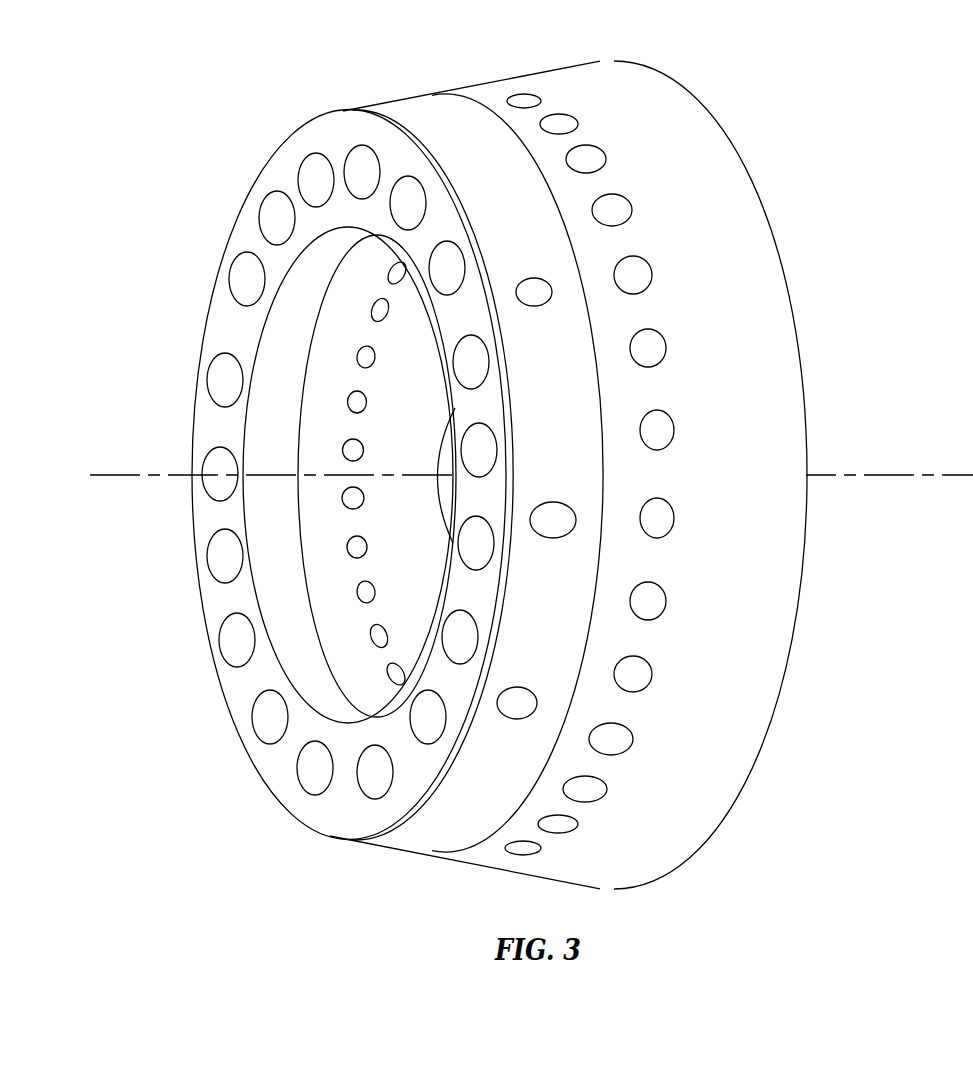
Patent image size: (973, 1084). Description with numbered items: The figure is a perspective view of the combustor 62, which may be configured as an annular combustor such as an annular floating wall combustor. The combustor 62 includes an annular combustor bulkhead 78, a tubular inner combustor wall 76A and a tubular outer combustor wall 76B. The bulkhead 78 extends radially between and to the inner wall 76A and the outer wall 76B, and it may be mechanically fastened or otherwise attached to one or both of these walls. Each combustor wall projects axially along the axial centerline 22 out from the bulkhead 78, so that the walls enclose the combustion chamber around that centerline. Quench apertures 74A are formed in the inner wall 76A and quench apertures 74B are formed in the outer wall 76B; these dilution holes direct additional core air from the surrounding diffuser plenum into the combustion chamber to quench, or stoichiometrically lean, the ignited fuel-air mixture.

The axial centerline 22 is at (944, 468).
The combustor 62 is at (813, 111).
The quench apertures 74A is at (399, 670).
The quench apertures 74B is at (673, 524).
The inner combustor wall 76A is at (297, 605).
The outer combustor wall 76B is at (752, 349).
The combustor bulkhead 78 is at (325, 810).